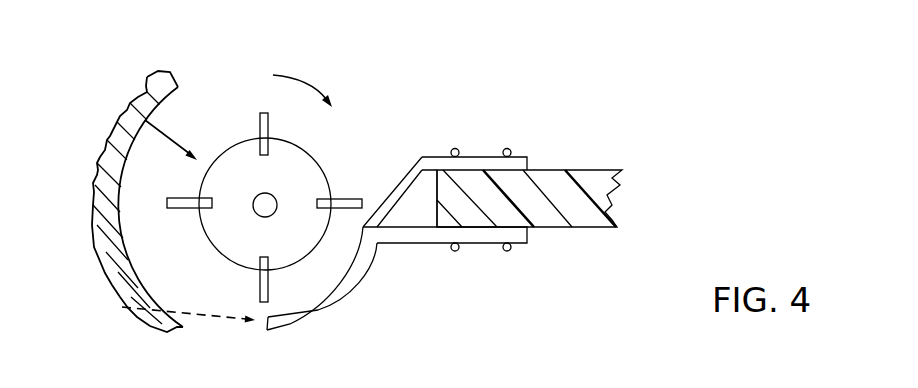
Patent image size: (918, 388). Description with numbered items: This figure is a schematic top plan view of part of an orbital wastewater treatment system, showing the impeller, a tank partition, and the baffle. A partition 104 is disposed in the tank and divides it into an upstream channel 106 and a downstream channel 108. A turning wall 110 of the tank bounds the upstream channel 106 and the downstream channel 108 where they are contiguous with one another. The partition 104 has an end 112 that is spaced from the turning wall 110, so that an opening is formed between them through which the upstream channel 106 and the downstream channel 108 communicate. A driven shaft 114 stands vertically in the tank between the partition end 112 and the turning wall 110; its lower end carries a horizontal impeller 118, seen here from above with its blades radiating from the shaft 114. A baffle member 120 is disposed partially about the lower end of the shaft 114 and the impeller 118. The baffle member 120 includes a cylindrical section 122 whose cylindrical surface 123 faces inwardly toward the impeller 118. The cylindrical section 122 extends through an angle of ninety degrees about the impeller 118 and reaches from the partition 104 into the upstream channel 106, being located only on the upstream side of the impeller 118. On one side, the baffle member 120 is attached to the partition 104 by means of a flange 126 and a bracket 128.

The partition 104 is at (555, 177).
The upstream channel 106 is at (490, 303).
The downstream channel 108 is at (473, 103).
The turning wall 110 is at (143, 105).
The end 112 is at (436, 185).
The driven shaft 114 is at (248, 168).
The horizontal impeller 118 is at (192, 209).
The baffle member 120 is at (369, 299).
The cylindrical section 122 is at (320, 313).
The cylindrical surface 123 is at (280, 318).
The flange 126 is at (490, 235).
The bracket 128 is at (403, 180).